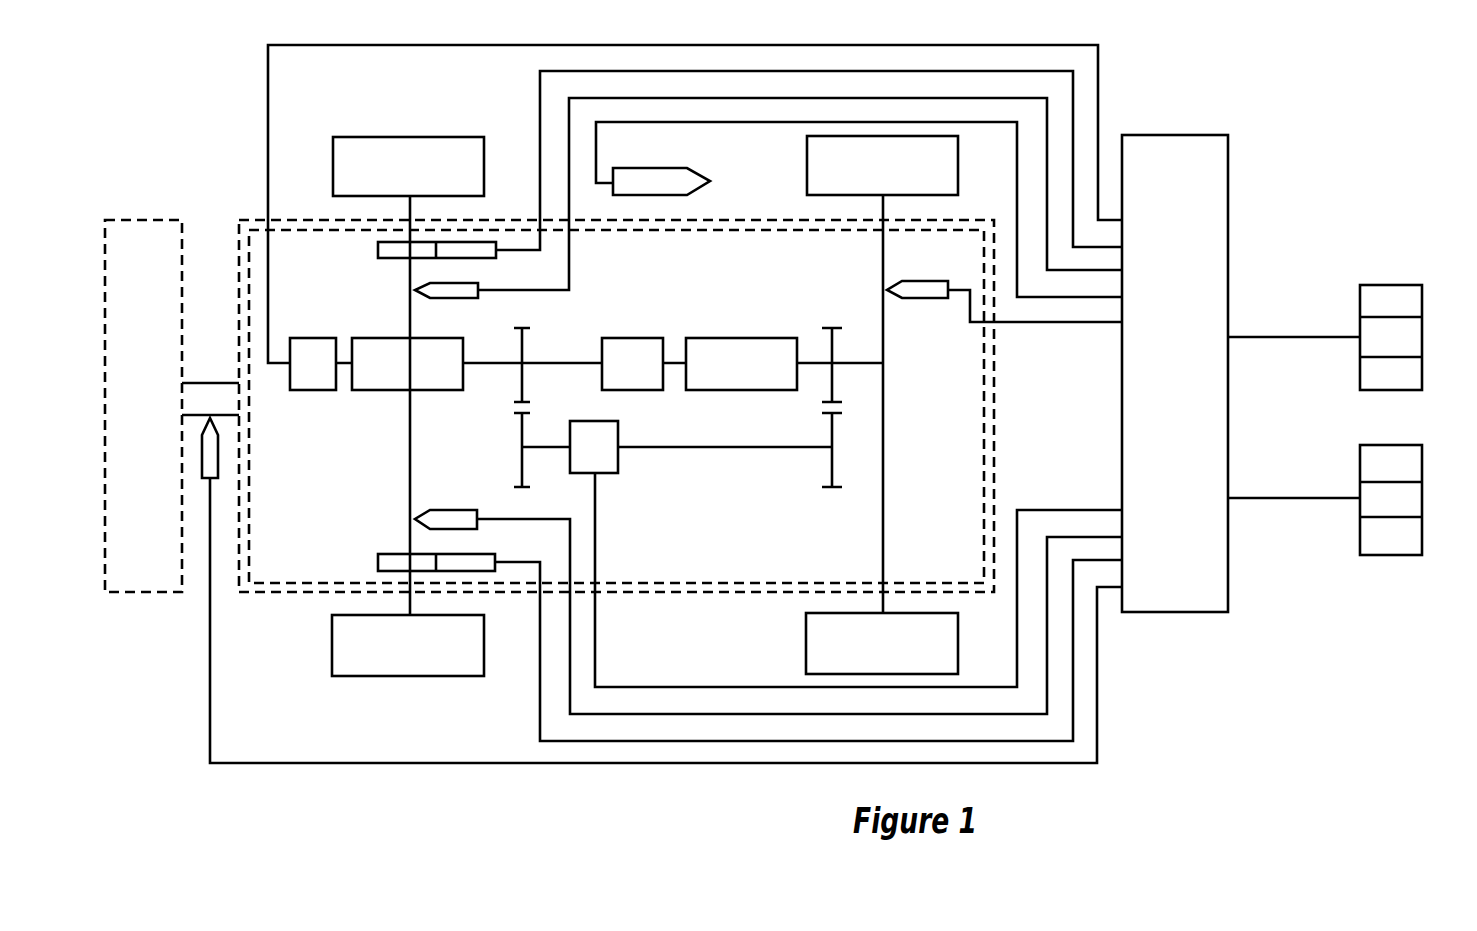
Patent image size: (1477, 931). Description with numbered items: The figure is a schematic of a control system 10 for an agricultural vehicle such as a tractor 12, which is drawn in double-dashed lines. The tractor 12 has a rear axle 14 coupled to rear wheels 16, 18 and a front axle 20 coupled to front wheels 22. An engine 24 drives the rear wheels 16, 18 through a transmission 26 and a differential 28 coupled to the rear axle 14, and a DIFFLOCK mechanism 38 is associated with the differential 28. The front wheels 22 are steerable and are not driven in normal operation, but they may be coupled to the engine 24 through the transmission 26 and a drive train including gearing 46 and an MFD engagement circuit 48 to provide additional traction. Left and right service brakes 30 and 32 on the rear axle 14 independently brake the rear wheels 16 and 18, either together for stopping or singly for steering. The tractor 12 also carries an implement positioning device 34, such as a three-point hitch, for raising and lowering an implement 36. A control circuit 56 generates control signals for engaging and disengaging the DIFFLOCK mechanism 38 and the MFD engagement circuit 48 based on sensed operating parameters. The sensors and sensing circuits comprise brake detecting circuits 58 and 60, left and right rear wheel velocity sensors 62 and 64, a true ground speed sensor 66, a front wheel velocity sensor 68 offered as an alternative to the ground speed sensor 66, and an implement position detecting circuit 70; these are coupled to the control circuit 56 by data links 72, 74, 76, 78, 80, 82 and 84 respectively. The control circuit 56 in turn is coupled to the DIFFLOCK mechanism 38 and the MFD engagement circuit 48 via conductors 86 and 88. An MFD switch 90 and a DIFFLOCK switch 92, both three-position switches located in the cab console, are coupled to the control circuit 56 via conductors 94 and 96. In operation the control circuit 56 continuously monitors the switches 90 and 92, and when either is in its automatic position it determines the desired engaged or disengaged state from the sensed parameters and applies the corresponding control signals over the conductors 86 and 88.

The control system 10 is at (1172, 63).
The tractor 12 is at (240, 208).
The rear axle 14 is at (408, 485).
The rear wheel 16 is at (400, 136).
The rear wheel 18 is at (355, 676).
The front axle 20 is at (883, 485).
The front wheels 22 is at (806, 169).
The engine 24 is at (785, 338).
The transmission 26 is at (660, 338).
The differential 28 is at (370, 390).
The left service brake 30 is at (378, 250).
The right service brake 32 is at (378, 554).
The implement positioning device 34 is at (203, 380).
The implement 36 is at (122, 592).
The DIFFLOCK mechanism 38 is at (310, 390).
The gearing 46 is at (512, 418).
The MFD engagement circuit 48 is at (595, 421).
The control circuit 56 is at (1232, 172).
The brake detecting circuit 58 is at (492, 258).
The brake detecting circuit 60 is at (490, 554).
The left rear wheel velocity sensor 62 is at (452, 298).
The right rear wheel velocity sensor 64 is at (443, 510).
The true ground speed sensor 66 is at (670, 168).
The front wheel velocity sensor 68 is at (925, 281).
The implement position detecting circuit 70 is at (202, 466).
The data link 72 is at (590, 70).
The data link 74 is at (668, 742).
The data link 76 is at (640, 97).
The data link 78 is at (750, 715).
The data link 80 is at (695, 122).
The data link 82 is at (965, 320).
The data link 84 is at (210, 653).
The conductor 86 is at (400, 44).
The conductor 88 is at (825, 688).
The MFD switch 90 is at (1422, 325).
The DIFFLOCK switch 92 is at (1422, 465).
The conductor 94 is at (1310, 337).
The conductor 96 is at (1310, 498).